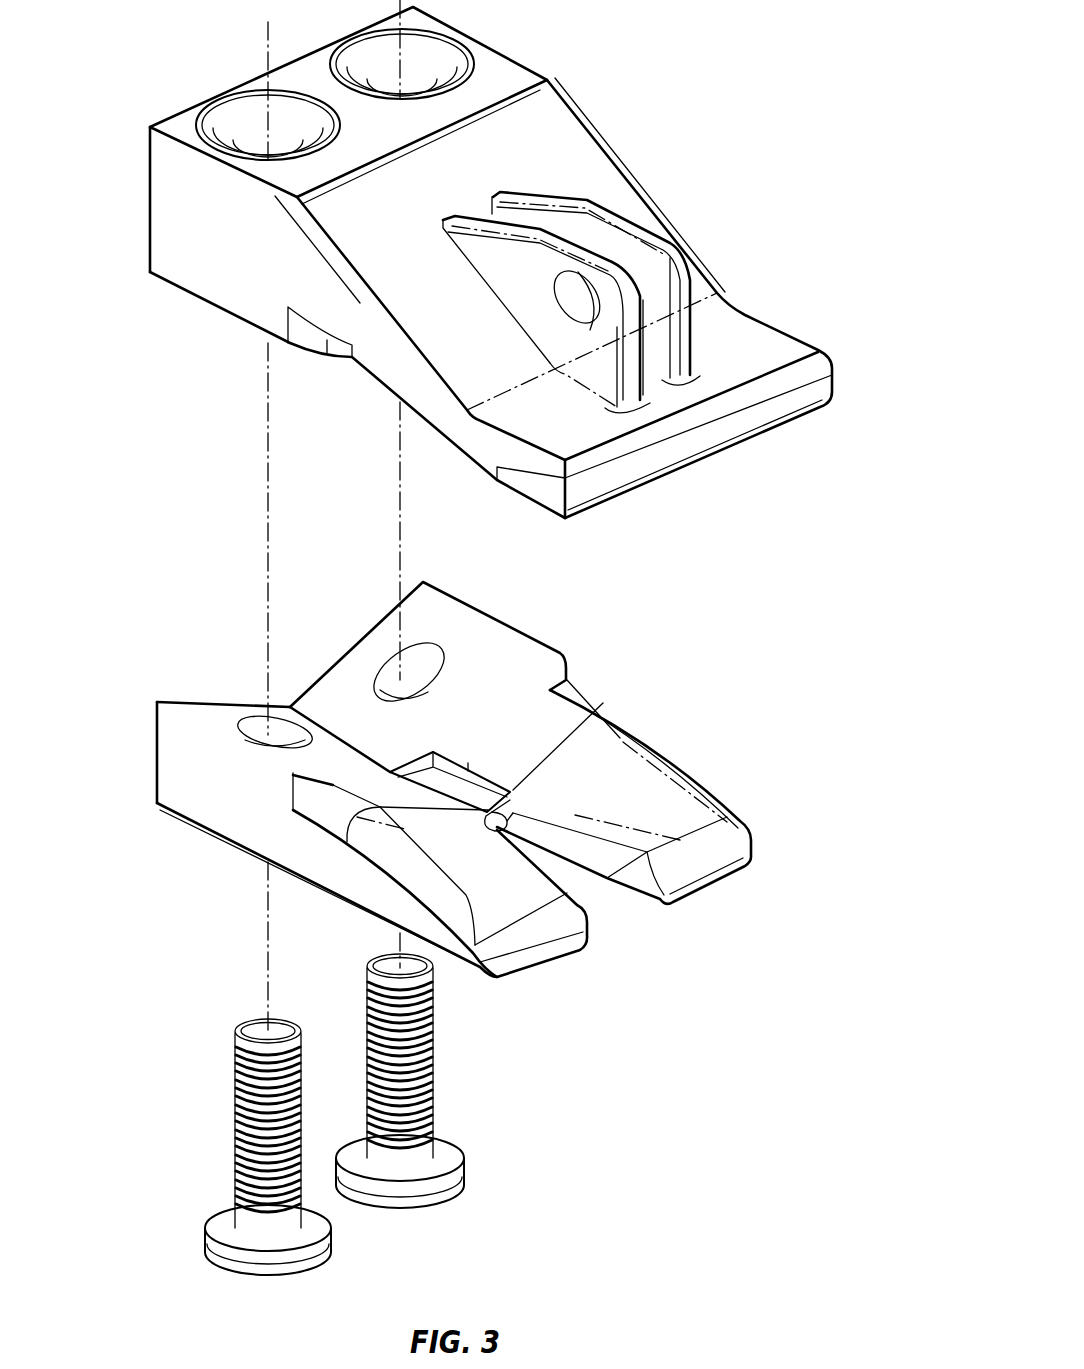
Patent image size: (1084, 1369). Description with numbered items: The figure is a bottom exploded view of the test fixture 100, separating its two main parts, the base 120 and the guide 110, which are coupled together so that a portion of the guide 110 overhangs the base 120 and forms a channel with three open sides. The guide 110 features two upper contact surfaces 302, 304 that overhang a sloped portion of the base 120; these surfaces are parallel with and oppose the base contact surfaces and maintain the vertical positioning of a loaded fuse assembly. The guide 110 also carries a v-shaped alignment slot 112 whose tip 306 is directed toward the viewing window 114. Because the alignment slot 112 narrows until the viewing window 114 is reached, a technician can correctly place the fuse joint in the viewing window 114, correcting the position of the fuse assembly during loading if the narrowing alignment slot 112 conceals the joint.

The test fixture 100 is at (802, 167).
The base 120 is at (187, 252).
The guide 110 is at (240, 797).
The alignment slot 112 is at (640, 922).
The viewing window 114 is at (443, 788).
The upper contact surface 302 is at (500, 863).
The upper contact surface 304 is at (660, 792).
The tip 306 is at (547, 800).